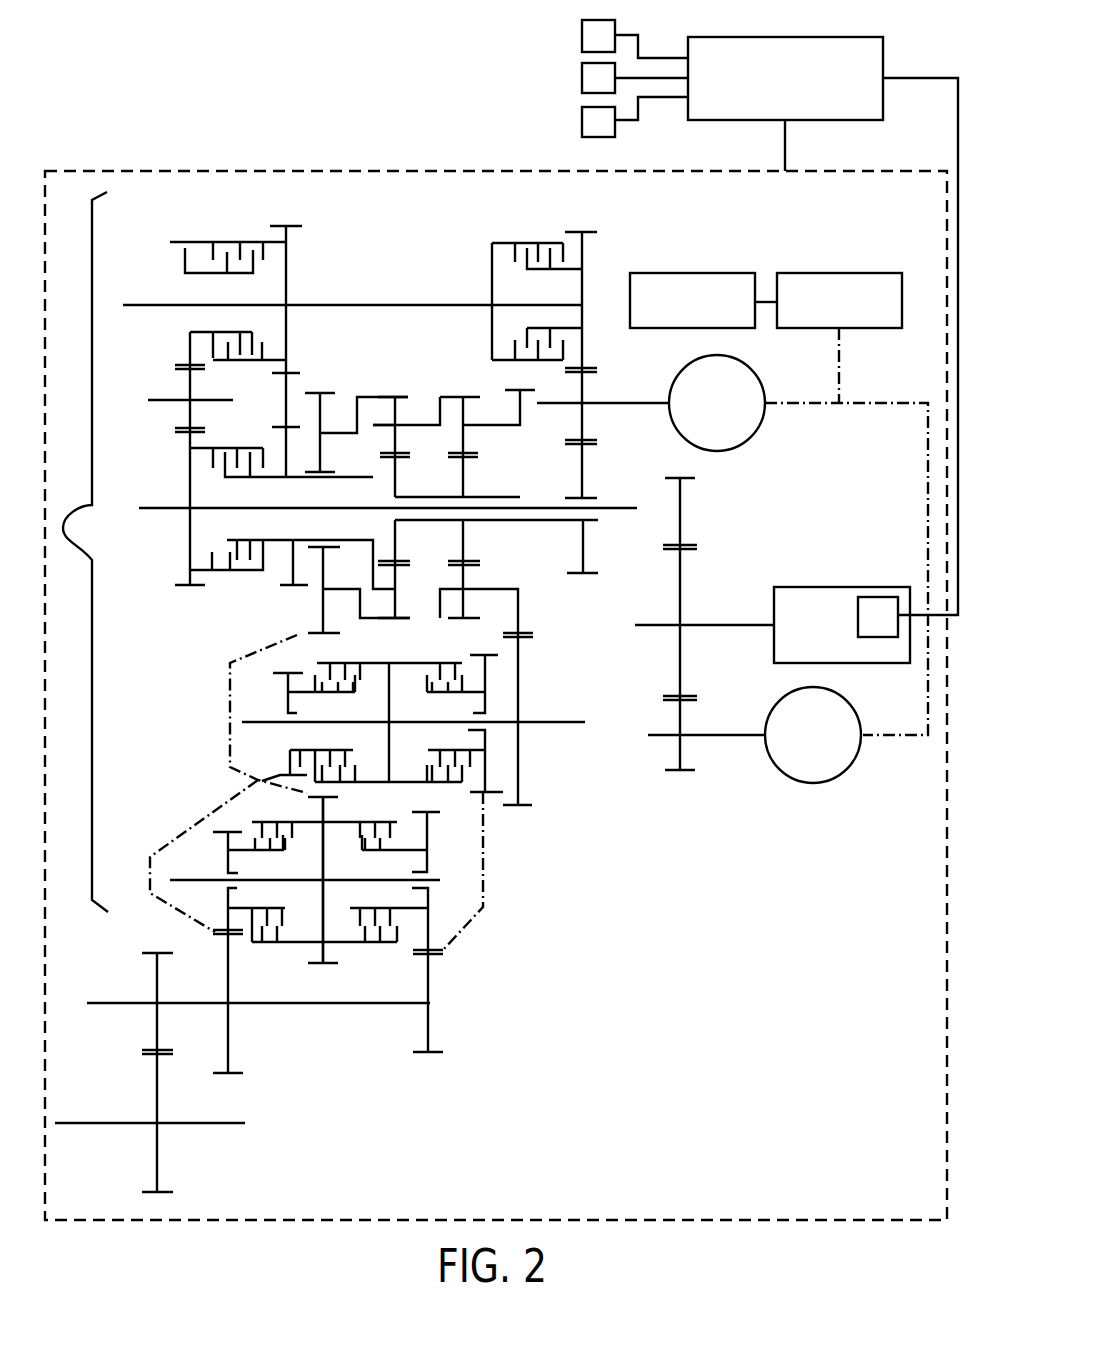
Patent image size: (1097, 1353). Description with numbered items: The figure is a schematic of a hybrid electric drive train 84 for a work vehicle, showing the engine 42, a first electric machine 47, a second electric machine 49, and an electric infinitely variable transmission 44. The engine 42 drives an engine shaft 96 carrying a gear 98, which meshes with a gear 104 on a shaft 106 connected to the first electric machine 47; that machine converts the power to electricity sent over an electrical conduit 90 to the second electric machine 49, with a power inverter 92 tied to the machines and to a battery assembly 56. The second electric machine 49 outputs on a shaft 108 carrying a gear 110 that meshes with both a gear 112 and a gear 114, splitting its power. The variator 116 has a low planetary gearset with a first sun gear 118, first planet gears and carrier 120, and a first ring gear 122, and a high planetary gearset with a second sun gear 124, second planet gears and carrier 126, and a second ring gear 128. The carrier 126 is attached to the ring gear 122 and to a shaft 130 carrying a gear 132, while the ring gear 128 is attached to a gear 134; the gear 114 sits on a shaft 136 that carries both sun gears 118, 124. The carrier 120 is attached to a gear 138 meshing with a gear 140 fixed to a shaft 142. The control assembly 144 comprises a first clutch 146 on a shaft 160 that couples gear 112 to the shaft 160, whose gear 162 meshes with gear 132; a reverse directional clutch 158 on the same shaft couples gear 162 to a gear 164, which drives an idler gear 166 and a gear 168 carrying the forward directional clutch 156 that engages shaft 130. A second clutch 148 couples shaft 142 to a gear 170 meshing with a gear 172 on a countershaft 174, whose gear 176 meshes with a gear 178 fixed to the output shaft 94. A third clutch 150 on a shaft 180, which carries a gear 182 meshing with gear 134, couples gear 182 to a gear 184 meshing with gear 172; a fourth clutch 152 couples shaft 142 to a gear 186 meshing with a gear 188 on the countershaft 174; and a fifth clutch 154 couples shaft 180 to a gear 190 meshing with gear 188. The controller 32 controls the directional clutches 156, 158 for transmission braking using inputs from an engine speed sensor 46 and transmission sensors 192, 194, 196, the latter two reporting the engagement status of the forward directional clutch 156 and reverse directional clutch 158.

The controller 32 is at (883, 57).
The engine 42 is at (848, 587).
The transmission 44 is at (336, 196).
The engine speed sensor 46 is at (878, 637).
The first electric machine 47 is at (848, 772).
The second electric machine 49 is at (758, 372).
The battery assembly 56 is at (690, 273).
The drive train 84 is at (800, 1232).
The electrical conduit 90 is at (866, 403).
The power inverter 92 is at (850, 273).
The output shaft 94 is at (195, 1123).
The engine shaft 96 is at (758, 630).
The gear 98 is at (680, 608).
The gear 104 is at (672, 750).
The shaft 106 is at (700, 735).
The shaft 108 is at (606, 403).
The gear 110 is at (583, 418).
The gear 112 is at (583, 250).
The gear 114 is at (587, 547).
The variator 116 is at (372, 378).
The first sun gear 118 is at (465, 478).
The first planet gears and associated carrier 120 is at (465, 437).
The first ring gear 122 is at (466, 395).
The second sun gear 124 is at (373, 478).
The second planet gears and associated carrier 126 is at (395, 433).
The second ring gear 128 is at (393, 397).
The shaft 130 is at (300, 540).
The gear 132 is at (293, 565).
The gear 134 is at (315, 612).
The shaft 136 is at (553, 520).
The gear 138 is at (520, 610).
The gear 140 is at (520, 700).
The shaft 142 is at (545, 722).
The control assembly 144 is at (78, 552).
The first clutch 146 is at (530, 243).
The second clutch 148 is at (368, 663).
The third clutch 150 is at (292, 945).
The fourth clutch 152 is at (398, 662).
The fifth clutch 154 is at (360, 945).
The forward directional clutch 156 is at (226, 448).
The reverse directional clutch 158 is at (215, 242).
The shaft 160 is at (345, 305).
The gear 162 is at (288, 286).
The gear 164 is at (190, 348).
The idler gear 166 is at (190, 384).
The gear 168 is at (190, 498).
The gear 170 is at (288, 683).
The gear 172 is at (225, 972).
The countershaft 174 is at (285, 1003).
The gear 176 is at (157, 980).
The gear 178 is at (157, 1097).
The shaft 180 is at (447, 880).
The gear 182 is at (322, 845).
The gear 184 is at (225, 840).
The gear 186 is at (483, 780).
The gear 188 is at (432, 975).
The gear 190 is at (432, 928).
The sensor 192 is at (582, 35).
The sensor 194 is at (582, 78).
The sensor 196 is at (582, 120).